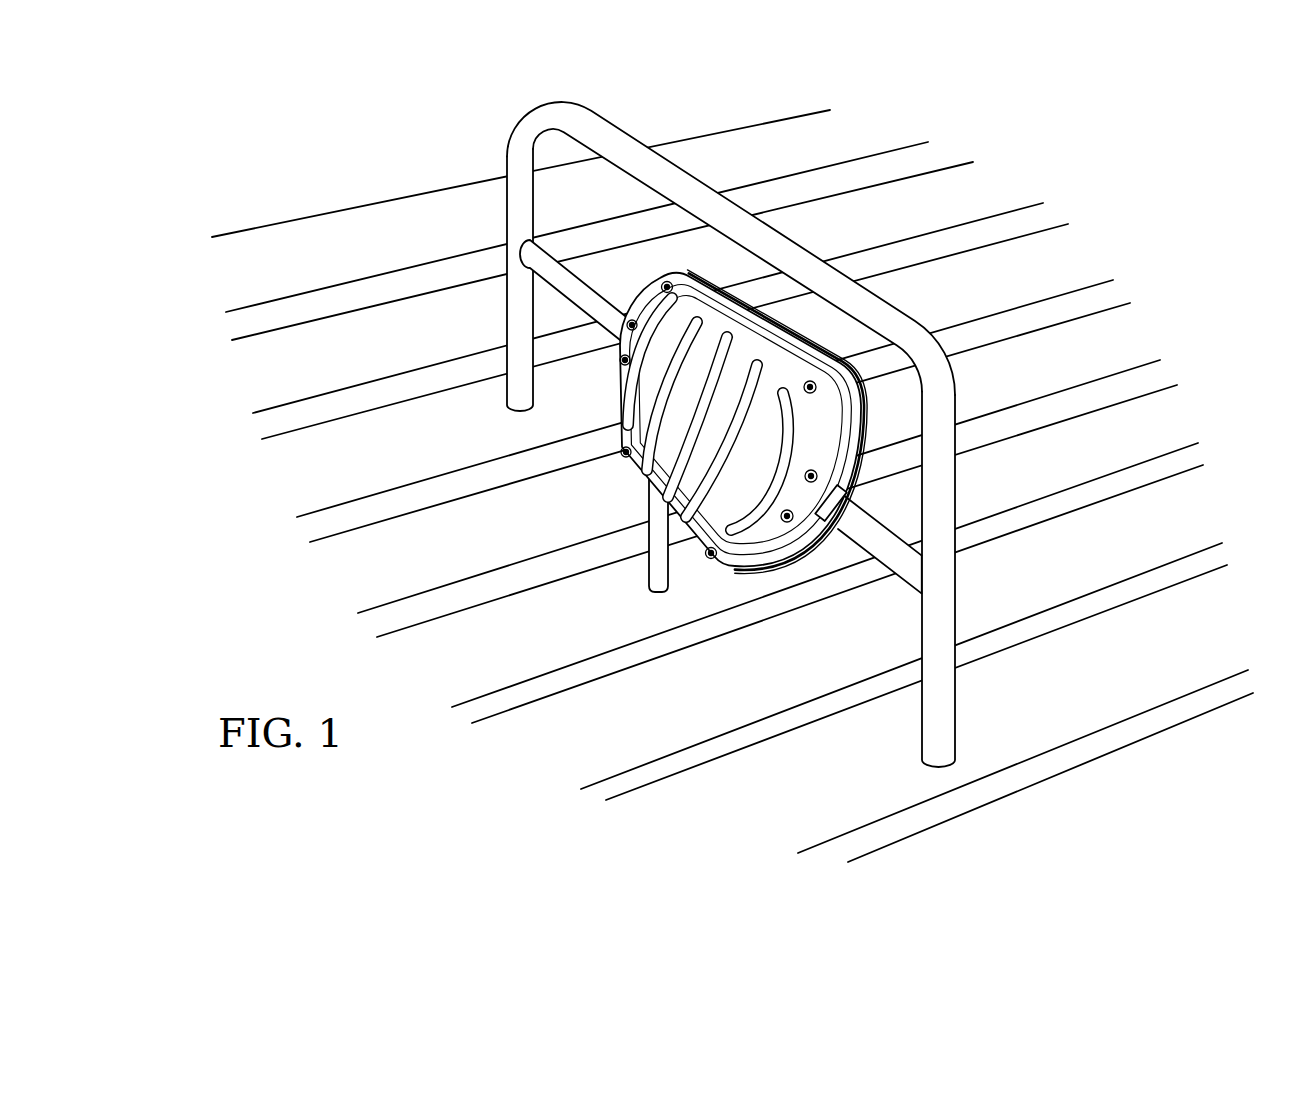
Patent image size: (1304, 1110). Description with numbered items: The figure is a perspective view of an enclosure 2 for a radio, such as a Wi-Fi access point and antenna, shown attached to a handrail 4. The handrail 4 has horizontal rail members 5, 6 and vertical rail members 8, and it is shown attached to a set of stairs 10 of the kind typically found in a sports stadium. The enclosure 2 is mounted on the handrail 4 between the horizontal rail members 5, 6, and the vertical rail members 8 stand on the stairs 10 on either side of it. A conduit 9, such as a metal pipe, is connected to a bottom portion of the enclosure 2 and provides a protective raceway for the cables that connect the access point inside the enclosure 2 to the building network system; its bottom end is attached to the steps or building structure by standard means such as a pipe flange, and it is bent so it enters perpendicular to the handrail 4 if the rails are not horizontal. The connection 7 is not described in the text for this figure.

The enclosure 2 is at (577, 493).
The handrail 4 is at (608, 128).
The horizontal rail member 5 is at (782, 236).
The horizontal rail member 6 is at (917, 578).
The pipe 7 is at (600, 310).
The vertical rail members 8 is at (514, 210).
The conduit 9 is at (665, 576).
The set of stairs 10 is at (350, 252).